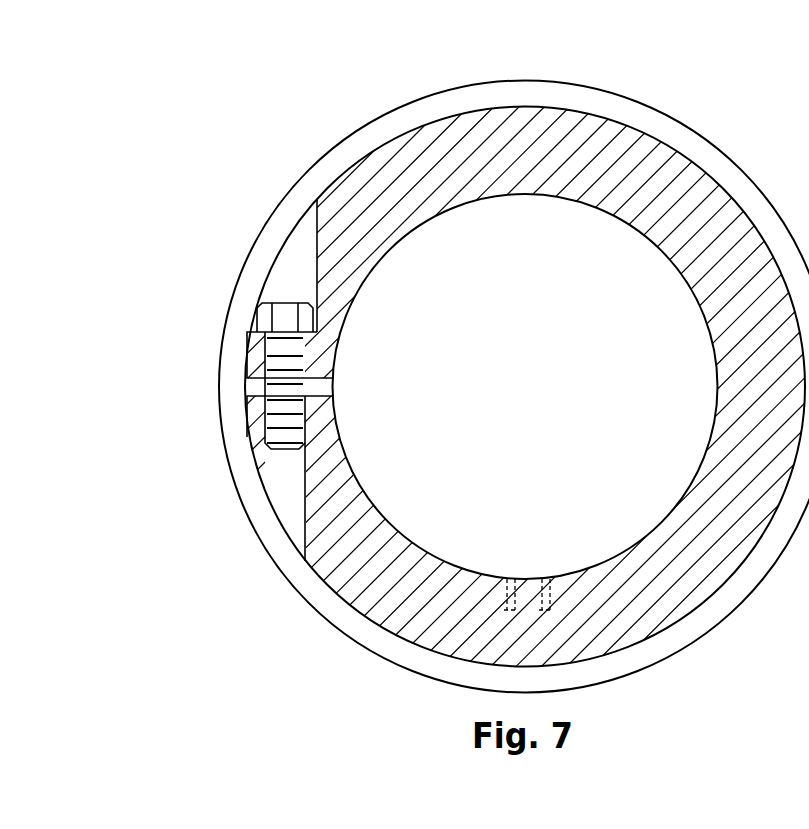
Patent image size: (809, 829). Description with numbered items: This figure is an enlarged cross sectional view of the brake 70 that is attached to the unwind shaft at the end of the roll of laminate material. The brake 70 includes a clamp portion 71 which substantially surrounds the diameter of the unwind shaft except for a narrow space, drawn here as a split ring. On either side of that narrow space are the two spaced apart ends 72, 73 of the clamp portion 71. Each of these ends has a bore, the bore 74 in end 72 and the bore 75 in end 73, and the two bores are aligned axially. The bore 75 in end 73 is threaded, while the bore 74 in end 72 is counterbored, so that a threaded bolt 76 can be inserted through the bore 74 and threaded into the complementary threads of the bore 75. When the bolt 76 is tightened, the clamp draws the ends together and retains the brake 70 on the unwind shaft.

The brake 70 is at (655, 105).
The clamp portion 71 is at (347, 173).
The spaced apart end 72 is at (247, 370).
The spaced apart end 73 is at (248, 418).
The bore 74 is at (253, 327).
The bore 75 is at (268, 497).
The threaded bolt 76 is at (277, 307).